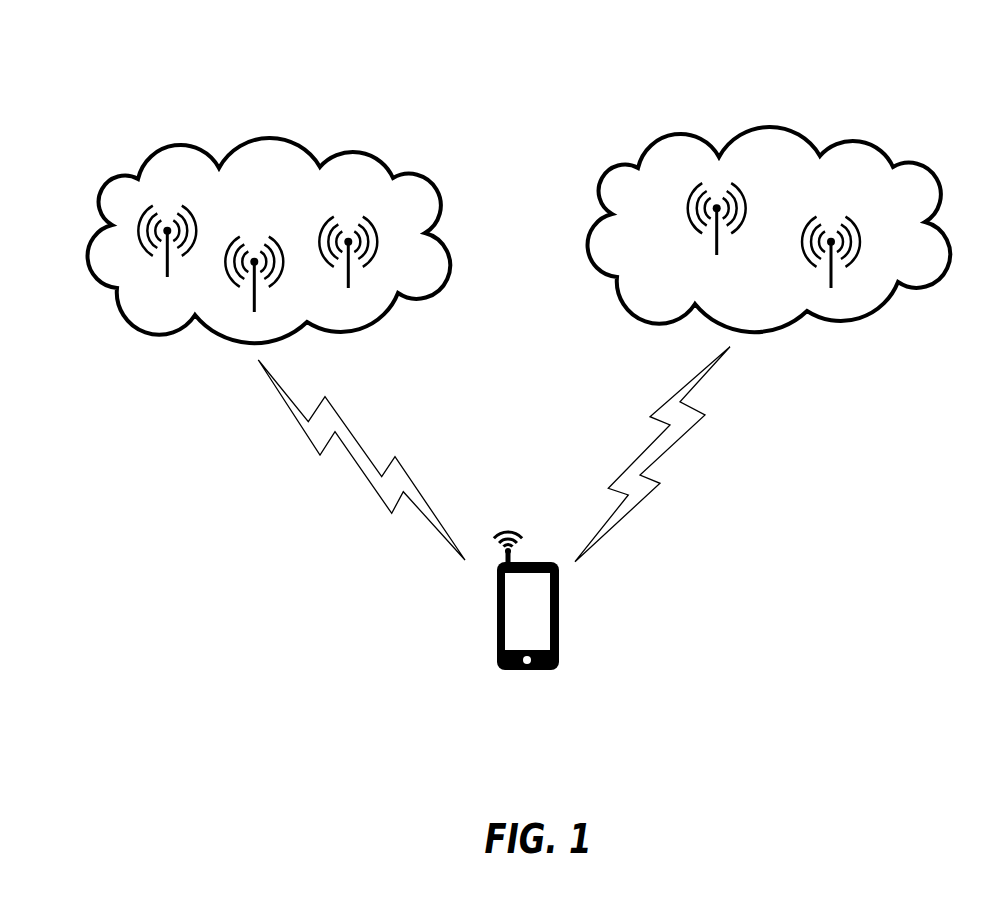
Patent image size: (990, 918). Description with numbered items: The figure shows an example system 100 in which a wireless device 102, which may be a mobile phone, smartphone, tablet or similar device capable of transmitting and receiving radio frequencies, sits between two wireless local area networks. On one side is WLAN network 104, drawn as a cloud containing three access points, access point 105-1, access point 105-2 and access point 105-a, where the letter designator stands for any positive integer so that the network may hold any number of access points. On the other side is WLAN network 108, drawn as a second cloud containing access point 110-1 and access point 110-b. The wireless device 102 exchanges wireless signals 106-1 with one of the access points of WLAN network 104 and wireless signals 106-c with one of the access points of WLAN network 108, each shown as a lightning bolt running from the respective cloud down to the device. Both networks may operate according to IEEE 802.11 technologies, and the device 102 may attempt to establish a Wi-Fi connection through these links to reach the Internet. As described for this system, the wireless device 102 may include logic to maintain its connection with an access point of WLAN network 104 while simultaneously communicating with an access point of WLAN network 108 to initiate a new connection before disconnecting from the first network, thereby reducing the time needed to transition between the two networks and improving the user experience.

The system 100 is at (504, 43).
The wireless device 102 is at (537, 678).
The WLAN network 104 is at (269, 240).
The access point 105-1 is at (164, 252).
The access point 105-2 is at (264, 278).
The access point 105-a is at (361, 253).
The wireless signals 106-1 is at (263, 402).
The wireless signals 106-c is at (695, 517).
The WLAN network 108 is at (769, 229).
The access point 110-1 is at (699, 219).
The access point 110-b is at (814, 256).